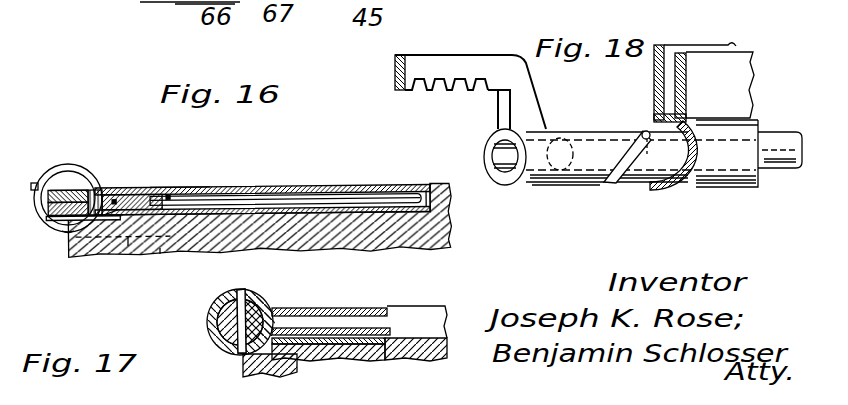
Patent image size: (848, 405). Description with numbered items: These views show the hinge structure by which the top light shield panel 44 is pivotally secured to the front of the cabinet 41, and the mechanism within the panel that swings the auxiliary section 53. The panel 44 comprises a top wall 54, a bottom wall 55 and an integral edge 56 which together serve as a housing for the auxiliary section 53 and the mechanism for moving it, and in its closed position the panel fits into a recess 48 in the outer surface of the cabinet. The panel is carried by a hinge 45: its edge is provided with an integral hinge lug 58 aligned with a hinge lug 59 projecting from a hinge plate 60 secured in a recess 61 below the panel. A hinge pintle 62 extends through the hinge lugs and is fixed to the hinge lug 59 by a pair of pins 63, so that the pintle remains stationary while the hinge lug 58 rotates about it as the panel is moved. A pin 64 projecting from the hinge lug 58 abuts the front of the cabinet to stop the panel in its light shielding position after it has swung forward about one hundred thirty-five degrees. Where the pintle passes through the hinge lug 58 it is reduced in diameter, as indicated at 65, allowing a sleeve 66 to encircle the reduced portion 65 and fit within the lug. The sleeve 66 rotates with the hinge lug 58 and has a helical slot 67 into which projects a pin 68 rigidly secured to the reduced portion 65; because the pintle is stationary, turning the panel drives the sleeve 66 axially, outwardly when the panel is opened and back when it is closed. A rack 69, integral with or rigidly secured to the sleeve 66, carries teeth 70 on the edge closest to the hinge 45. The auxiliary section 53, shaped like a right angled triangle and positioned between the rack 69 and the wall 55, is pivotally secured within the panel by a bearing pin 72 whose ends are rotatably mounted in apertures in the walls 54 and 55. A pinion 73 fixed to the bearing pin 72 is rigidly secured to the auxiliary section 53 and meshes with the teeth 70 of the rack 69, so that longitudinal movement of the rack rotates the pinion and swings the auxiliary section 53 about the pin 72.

In FIG. 16, the cabinet 41 is at (447, 231).
In FIG. 17, the cabinet 41 is at (234, 373).
In FIG. 16, the top light shield panel 44 is at (320, 181).
In FIG. 18, the top light shield panel 44 is at (730, 44).
In FIG. 16, the hinge 45 is at (43, 230).
In FIG. 17, the hinge 45 is at (205, 308).
In FIG. 16, the recess 48 is at (256, 214).
In FIG. 17, the recess 48 is at (408, 329).
In FIG. 16, the auxiliary section 53 is at (360, 203).
In FIG. 16, the top wall 54 is at (255, 196).
In FIG. 18, the top wall 54 is at (745, 60).
In FIG. 16, the bottom wall 55 is at (374, 214).
In FIG. 18, the bottom wall 55 is at (654, 72).
In FIG. 18, the integral edge 56 is at (505, 185).
In FIG. 16, the hinge lug 58 is at (66, 233).
In FIG. 18, the hinge lug 58 is at (728, 185).
In FIG. 17, the hinge lug 59 is at (209, 328).
In FIG. 16, the hinge plate 60 is at (162, 254).
In FIG. 17, the hinge plate 60 is at (343, 351).
In FIG. 16, the recess 61 is at (128, 246).
In FIG. 17, the recess 61 is at (291, 348).
In FIG. 17, the hinge pintle 62 is at (263, 312).
In FIG. 18, the hinge pintle 62 is at (775, 133).
In FIG. 17, the pins 63 is at (243, 292).
In FIG. 16, the pin 64 is at (40, 183).
In FIG. 16, the reduced portion 65 is at (69, 189).
In FIG. 16, the sleeve 66 is at (64, 188).
In FIG. 18, the sleeve 66 is at (548, 183).
In FIG. 18, the helical slot 67 is at (607, 182).
In FIG. 18, the pin 68 is at (644, 132).
In FIG. 16, the rack 69 is at (181, 193).
In FIG. 18, the rack 69 is at (490, 55).
In FIG. 18, the teeth 70 is at (428, 91).
In FIG. 16, the bearing pin 72 is at (97, 200).
In FIG. 16, the pinion 73 is at (130, 202).